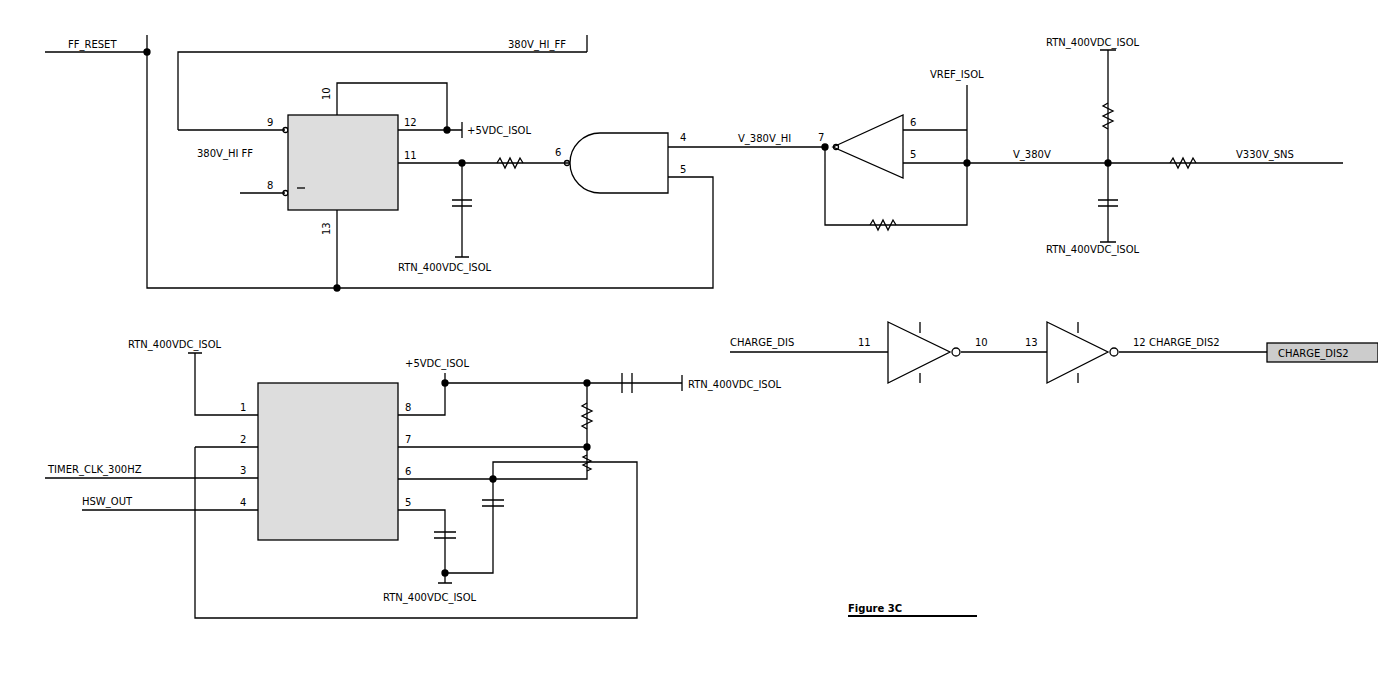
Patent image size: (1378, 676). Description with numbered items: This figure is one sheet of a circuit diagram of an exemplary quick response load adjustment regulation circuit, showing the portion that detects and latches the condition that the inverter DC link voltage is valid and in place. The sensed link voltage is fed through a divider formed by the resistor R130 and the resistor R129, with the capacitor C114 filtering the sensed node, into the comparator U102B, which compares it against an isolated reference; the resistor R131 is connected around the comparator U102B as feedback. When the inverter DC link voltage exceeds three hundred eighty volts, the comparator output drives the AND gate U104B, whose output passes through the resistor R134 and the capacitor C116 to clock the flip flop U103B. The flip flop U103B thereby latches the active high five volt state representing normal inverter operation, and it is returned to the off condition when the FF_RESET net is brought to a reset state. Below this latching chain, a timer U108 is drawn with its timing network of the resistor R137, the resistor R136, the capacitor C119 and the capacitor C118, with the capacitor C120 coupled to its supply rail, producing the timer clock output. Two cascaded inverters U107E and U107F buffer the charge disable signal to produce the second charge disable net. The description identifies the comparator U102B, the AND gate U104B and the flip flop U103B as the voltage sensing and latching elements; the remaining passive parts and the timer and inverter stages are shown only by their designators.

The flip flop U103B is at (319, 149).
The resistor 1K R134 is at (506, 166).
The capacitor 1500pF C116 is at (484, 227).
The AND gate U104B is at (619, 176).
The comparator U102B is at (856, 125).
The resistor 1Meg R131 is at (875, 230).
The resistor 90.9K R130 is at (1127, 115).
The capacitor 1500pF C114 is at (1082, 146).
The resistor 13K R129 is at (1183, 166).
The timer NE555 U108 is at (319, 462).
The resistor 51K R137 is at (566, 417).
The resistor 332K R136 is at (558, 477).
The capacitor 0.01uF C119 is at (512, 535).
The capacitor 0.1uF C118 is at (437, 540).
The capacitor 0.1uF C120 is at (629, 390).
The inverter 74HC14 U107E is at (933, 357).
The inverter 74HC14 U107F is at (1090, 357).